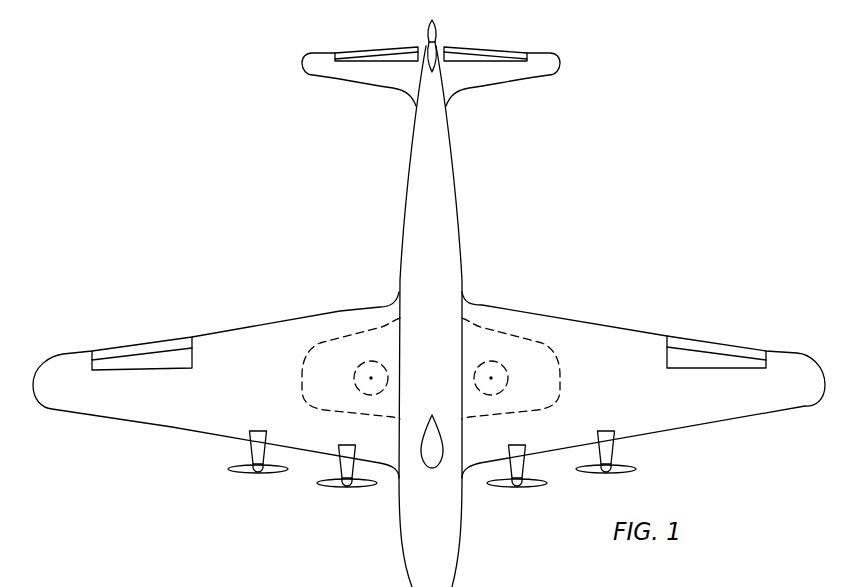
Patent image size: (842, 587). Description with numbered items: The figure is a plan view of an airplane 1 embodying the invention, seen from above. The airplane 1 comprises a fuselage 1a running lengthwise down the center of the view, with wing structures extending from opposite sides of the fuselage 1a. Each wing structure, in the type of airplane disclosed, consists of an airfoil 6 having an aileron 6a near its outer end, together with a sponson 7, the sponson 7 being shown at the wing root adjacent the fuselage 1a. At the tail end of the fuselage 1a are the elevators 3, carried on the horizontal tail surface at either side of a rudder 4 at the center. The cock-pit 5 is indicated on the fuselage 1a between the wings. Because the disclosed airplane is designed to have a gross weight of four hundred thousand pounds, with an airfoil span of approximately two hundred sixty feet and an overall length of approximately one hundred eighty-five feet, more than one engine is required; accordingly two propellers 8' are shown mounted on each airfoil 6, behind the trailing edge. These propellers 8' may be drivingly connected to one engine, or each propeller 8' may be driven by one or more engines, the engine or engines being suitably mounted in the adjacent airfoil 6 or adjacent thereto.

The airplane 1 is at (419, 316).
The fuselage 1a is at (399, 253).
The elevators 3 is at (372, 58).
The rudder 4 is at (437, 40).
The cock-pit 5 is at (432, 468).
The airfoil 6 is at (173, 429).
The aileron 6a is at (690, 343).
The sponson 7 is at (643, 385).
The propellers 8' is at (432, 459).